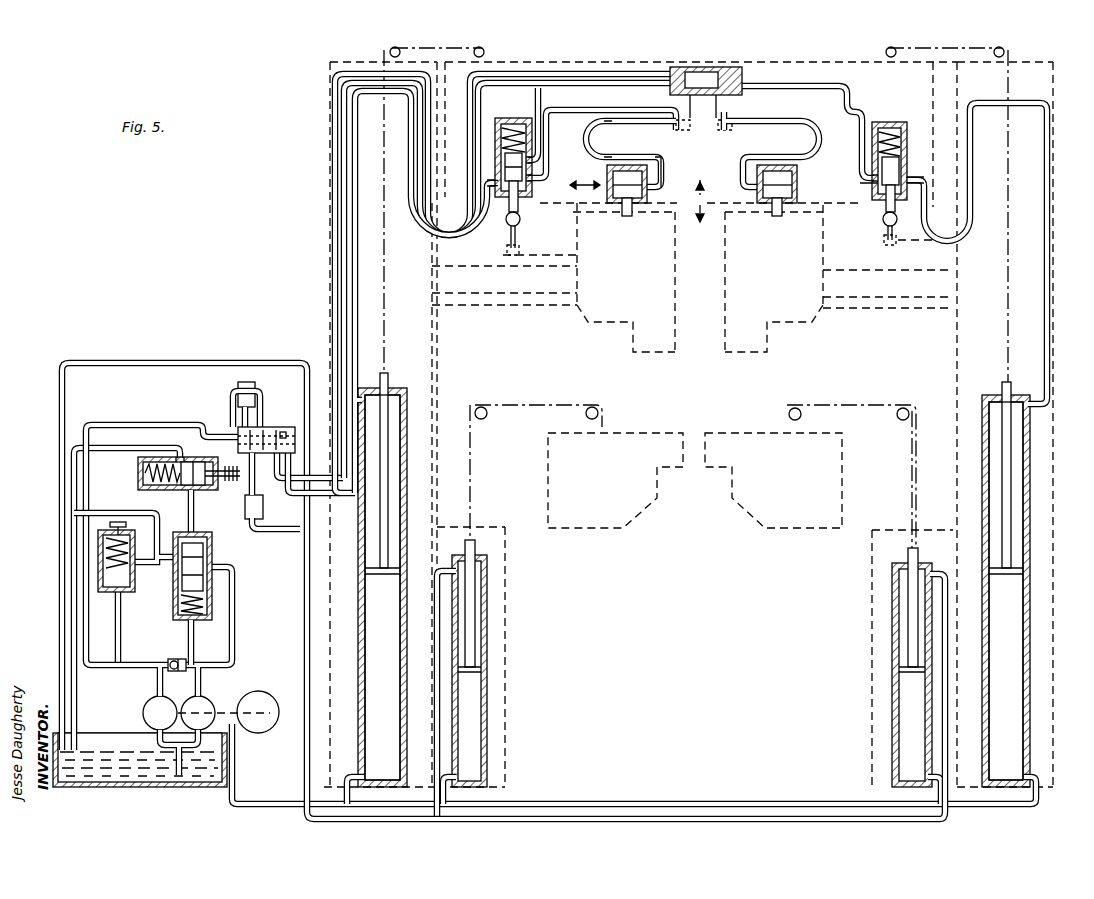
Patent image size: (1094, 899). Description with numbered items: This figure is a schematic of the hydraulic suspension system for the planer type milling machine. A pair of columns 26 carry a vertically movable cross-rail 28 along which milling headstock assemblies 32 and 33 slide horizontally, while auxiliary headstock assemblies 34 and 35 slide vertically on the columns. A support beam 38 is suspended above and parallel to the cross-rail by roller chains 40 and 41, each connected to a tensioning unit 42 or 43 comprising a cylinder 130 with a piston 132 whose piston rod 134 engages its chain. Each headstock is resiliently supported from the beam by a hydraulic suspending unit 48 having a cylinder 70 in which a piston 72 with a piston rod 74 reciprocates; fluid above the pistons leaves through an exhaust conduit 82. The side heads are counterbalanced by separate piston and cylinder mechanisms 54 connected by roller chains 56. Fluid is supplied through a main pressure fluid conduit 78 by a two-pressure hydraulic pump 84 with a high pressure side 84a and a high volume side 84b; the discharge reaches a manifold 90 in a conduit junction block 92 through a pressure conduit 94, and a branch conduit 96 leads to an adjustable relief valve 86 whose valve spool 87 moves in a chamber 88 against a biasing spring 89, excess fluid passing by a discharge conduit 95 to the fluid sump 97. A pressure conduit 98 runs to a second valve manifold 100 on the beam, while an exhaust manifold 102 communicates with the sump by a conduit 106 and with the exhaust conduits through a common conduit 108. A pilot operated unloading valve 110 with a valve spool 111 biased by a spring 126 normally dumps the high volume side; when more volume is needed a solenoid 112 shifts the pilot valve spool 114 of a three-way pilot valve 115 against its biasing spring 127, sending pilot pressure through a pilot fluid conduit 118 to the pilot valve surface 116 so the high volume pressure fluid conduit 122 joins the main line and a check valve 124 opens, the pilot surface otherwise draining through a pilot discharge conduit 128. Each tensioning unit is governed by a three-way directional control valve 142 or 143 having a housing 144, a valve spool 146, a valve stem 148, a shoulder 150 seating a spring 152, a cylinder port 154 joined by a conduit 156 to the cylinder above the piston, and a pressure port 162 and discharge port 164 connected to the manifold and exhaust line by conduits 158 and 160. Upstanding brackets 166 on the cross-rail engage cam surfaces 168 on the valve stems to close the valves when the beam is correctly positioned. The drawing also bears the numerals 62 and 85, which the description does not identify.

The columns 26 is at (437, 330).
The cross-rail 28 is at (700, 315).
The milling headstock assembly 32 is at (580, 318).
The milling headstock assembly 33 is at (805, 318).
The auxiliary headstock assembly 34 is at (578, 528).
The auxiliary headstock assembly 35 is at (792, 528).
The support beam 38 is at (847, 62).
The roller chain 40 is at (385, 318).
The roller chain 41 is at (1007, 310).
The tensioning unit 42 is at (400, 378).
The tensioning unit 43 is at (991, 385).
The hydraulic suspending unit 48 is at (728, 186).
The hydraulic piston and cylinder mechanism 54 is at (487, 648).
The roller chains 56 is at (520, 410).
The conduit 62 is at (603, 126).
The cylinder 70 is at (627, 165).
The piston 72 is at (618, 198).
The piston rod 74 is at (627, 210).
The main pressure fluid conduit 78 is at (662, 165).
The exhaust conduit 82 is at (822, 122).
The hydraulic pump 84 is at (162, 703).
The low volume high pressure side of the pump 84a is at (143, 705).
The high volume low pressure side of the pump 84b is at (205, 700).
The motor 85 is at (257, 700).
The adjustable relief valve 86 is at (135, 585).
The valve spool 87 is at (125, 572).
The chamber 88 is at (116, 557).
The valve spool biasing spring 89 is at (82, 555).
The manifold 90 is at (284, 436).
The conduit junction block 92 is at (258, 414).
The pressure conduit 94 is at (140, 425).
The discharge conduit 95 is at (72, 604).
The branch conduit 96 is at (118, 634).
The fluid sump 97 is at (116, 760).
The pressure conduit 98 is at (333, 206).
The second valve manifold 100 is at (698, 70).
The exhaust manifold 102 is at (280, 460).
The conduit 106 is at (195, 363).
The common conduit 108 is at (352, 272).
The pilot operated unloading valve 110 is at (214, 586).
The valve spool 111 is at (212, 568).
The solenoid 112 is at (232, 482).
The pilot valve spool 114 is at (178, 488).
The three-way pilot valve 115 is at (169, 467).
The pilot valve surface 116 is at (204, 512).
The pilot fluid conduit 118 is at (189, 508).
The high volume pressure fluid conduit 122 is at (232, 615).
The check valve 124 is at (183, 660).
The spring 126 is at (188, 620).
The biasing spring 127 is at (176, 457).
The pilot discharge conduit 128 is at (72, 448).
The cylinder 130 is at (407, 460).
The piston 132 is at (388, 575).
The piston rod 134 is at (388, 412).
The three-way directional control valve 142 is at (487, 212).
The three-way directional control valve 143 is at (872, 192).
The housing 144 is at (508, 200).
The valve spool 146 is at (916, 152).
The valve stem 148 is at (520, 210).
The shoulder 150 is at (697, 178).
The spring 152 is at (502, 128).
The cylinder port 154 is at (510, 240).
The conduit 156 is at (341, 244).
The conduit 158 is at (556, 98).
The conduit 160 is at (538, 120).
The pressure port 162 is at (535, 178).
The discharge port 164 is at (533, 160).
The upstanding bracket 166 is at (565, 252).
The cam surface 168 is at (520, 221).